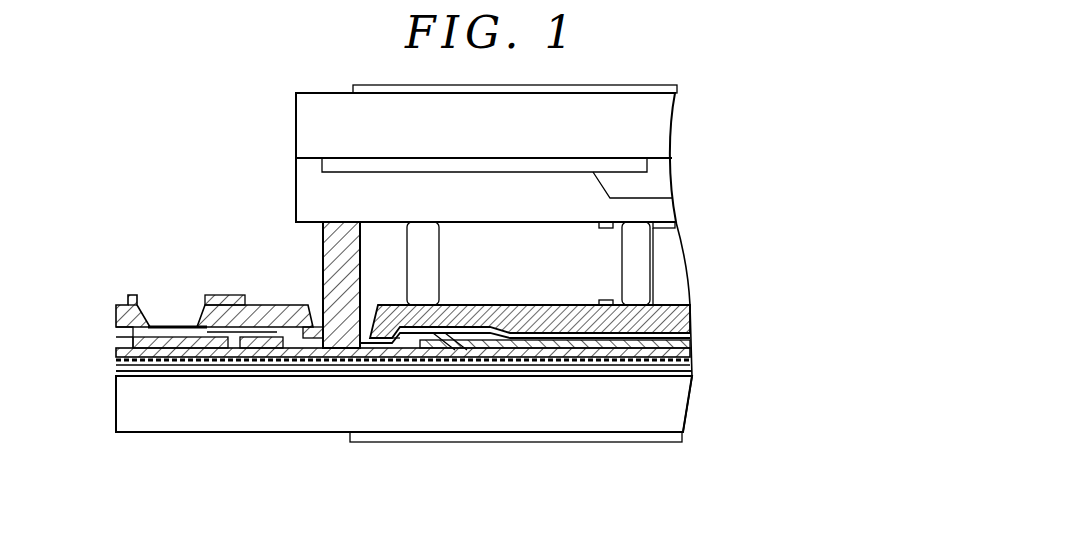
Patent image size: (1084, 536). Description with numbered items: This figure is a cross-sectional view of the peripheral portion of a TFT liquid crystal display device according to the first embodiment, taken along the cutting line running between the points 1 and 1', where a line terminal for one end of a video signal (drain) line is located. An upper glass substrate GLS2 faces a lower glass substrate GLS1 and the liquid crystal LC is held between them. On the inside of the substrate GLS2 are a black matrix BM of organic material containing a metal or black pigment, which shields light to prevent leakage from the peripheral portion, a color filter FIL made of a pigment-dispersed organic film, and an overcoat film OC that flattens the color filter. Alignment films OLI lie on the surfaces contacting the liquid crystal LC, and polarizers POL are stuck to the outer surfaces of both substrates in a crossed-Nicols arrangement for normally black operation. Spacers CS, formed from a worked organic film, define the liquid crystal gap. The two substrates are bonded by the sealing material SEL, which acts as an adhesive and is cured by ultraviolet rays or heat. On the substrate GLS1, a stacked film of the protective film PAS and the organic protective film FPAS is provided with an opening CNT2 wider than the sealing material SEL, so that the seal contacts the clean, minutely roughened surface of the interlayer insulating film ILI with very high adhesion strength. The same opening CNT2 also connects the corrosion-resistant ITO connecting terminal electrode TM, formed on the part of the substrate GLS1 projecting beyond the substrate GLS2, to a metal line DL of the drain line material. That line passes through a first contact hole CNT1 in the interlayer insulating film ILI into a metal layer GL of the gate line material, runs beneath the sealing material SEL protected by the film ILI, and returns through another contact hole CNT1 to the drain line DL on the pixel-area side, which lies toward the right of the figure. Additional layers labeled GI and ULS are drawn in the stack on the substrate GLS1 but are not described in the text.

The polarizer POL is at (676, 88).
The substrate GLS2 is at (648, 120).
The black matrix BM is at (636, 166).
The color filter FIL is at (660, 190).
The overcoat film OC is at (664, 214).
The alignment film OLI is at (676, 226).
The spacer CS is at (632, 258).
The sealing material SEL is at (326, 264).
The liquid crystal LC is at (580, 276).
The connecting terminal electrode TM is at (153, 317).
The second contact hole CNT2 is at (174, 316).
The organic protective film FPAS is at (690, 302).
The protective film PAS is at (690, 333).
The interlayer insulating film ILI is at (690, 345).
The gate insulating film GI is at (692, 372).
The undercoat layer ULS is at (673, 415).
The substrate GLS1 is at (684, 438).
The drain line DL is at (162, 376).
The gate line GL is at (278, 374).
The first contact hole CNT1 is at (223, 380).
The cutting line end 1 is at (95, 402).
The cutting line end 1' is at (733, 402).